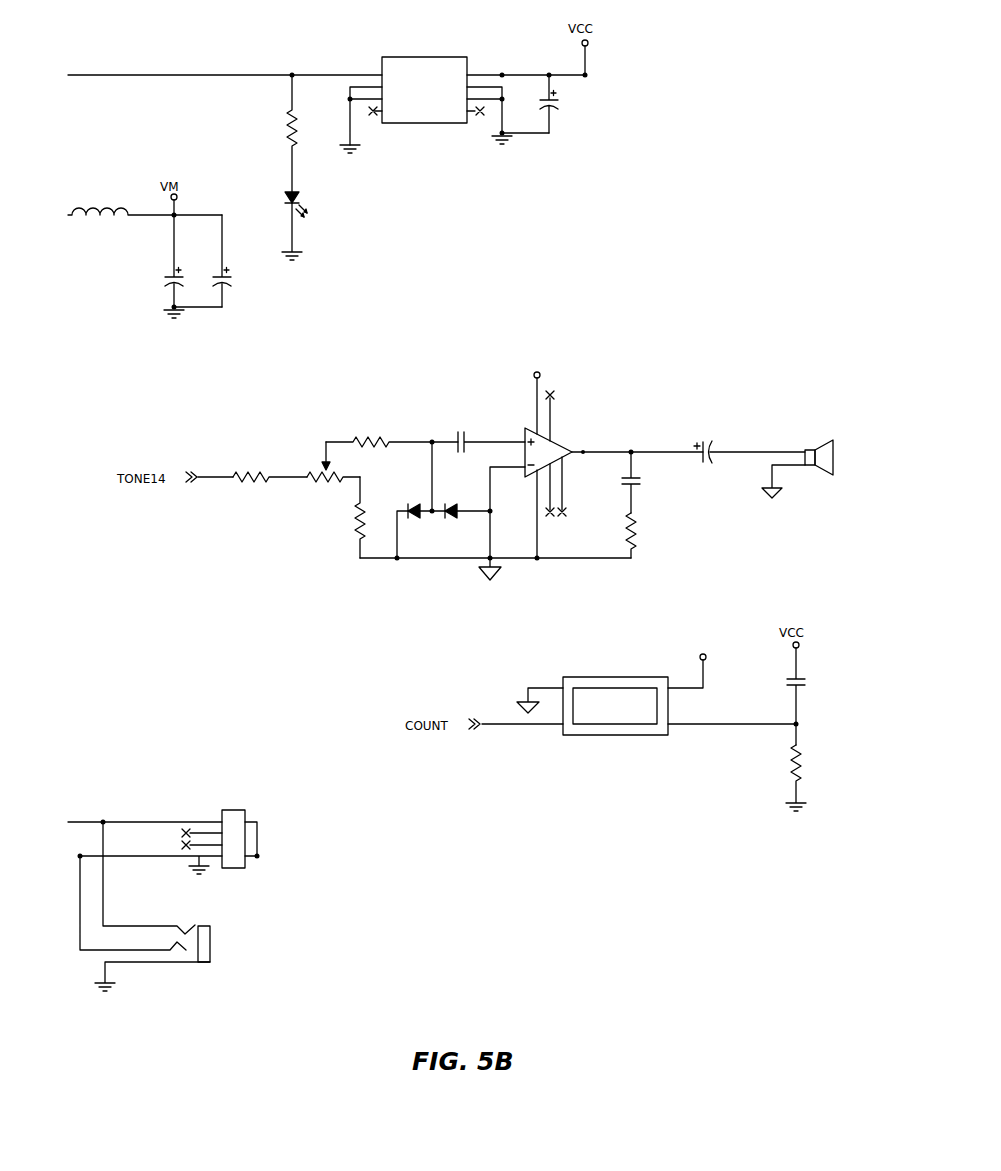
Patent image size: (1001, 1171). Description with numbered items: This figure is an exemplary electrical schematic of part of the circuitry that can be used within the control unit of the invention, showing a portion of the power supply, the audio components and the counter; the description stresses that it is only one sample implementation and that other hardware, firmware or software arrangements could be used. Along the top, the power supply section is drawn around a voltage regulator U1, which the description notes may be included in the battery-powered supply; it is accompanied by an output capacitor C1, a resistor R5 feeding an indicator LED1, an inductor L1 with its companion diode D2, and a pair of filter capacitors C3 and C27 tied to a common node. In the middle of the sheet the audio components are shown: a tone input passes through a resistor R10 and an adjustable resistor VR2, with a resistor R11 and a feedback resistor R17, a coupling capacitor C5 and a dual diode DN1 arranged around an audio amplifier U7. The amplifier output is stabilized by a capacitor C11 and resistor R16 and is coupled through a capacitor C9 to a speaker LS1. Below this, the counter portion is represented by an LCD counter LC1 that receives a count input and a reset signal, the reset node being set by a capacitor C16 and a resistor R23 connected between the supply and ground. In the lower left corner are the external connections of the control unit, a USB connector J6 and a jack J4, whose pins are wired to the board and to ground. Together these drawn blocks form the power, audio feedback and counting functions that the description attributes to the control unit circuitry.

The voltage regulator LM2931-5.0/SO U1 is at (444, 96).
The capacitor 100uF 10V C1 is at (567, 109).
The resistor 1K R5 is at (301, 133).
The blue LED LED1 is at (310, 220).
The inductor 100uH L1 is at (145, 211).
The diode MBRS130TR D2 is at (106, 256).
The capacitor 100uF 10V C3 is at (165, 267).
The capacitor 100uF 10V C27 is at (238, 267).
The resistor 53.6K R10 is at (267, 479).
The variable resistor 5Kohm VR2 is at (324, 472).
The resistor 330 R11 is at (344, 517).
The resistor 10K R17 is at (392, 445).
The capacitor .01uf C5 is at (481, 444).
The dual diode MMBD4148 DN1 is at (443, 523).
The audio amplifier LM386/SO U7 is at (560, 456).
The capacitor 1uf C11 is at (645, 482).
The resistor 10 R16 is at (646, 534).
The capacitor 100uF 10V C9 is at (749, 458).
The speaker LS1 is at (799, 461).
The LCD counter LC1 is at (639, 702).
The capacitor 22uF C16 is at (813, 696).
The resistor 27K R23 is at (808, 778).
The USB B connector J6 is at (187, 831).
The jack connector J4 is at (160, 906).